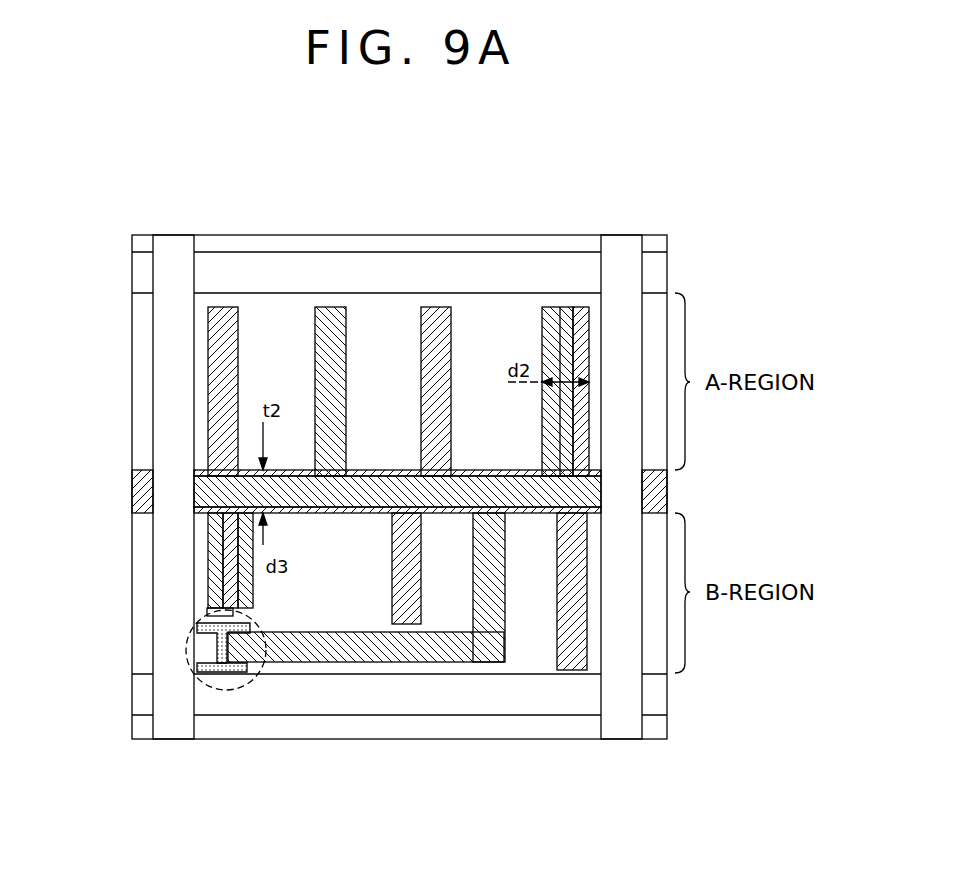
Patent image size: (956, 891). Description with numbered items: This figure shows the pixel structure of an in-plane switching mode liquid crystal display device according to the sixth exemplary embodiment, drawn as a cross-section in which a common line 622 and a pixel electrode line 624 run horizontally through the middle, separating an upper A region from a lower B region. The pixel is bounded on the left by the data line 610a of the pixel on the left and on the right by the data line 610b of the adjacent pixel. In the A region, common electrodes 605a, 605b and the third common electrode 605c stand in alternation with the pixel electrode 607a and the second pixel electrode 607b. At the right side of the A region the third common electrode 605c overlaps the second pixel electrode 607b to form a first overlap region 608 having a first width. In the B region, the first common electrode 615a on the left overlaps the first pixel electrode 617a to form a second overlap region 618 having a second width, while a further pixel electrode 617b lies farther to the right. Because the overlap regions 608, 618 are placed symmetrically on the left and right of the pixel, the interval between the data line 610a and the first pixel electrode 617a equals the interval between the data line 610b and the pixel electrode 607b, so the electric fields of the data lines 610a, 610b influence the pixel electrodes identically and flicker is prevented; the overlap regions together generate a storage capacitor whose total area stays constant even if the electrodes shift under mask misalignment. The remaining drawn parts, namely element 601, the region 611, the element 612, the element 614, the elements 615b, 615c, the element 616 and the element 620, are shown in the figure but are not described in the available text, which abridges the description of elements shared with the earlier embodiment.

The semiconductor device / substrate structure 601 is at (690, 243).
The common electrode 605a is at (225, 305).
The common electrode 605b is at (436, 305).
The third common electrode 605c is at (583, 305).
The pixel electrode 607a is at (326, 305).
The second pixel electrode 607b is at (553, 305).
The overlap region 608 is at (577, 328).
The data line 610a is at (172, 728).
The data line 610b is at (620, 727).
The contact region (enlarged) 611 is at (172, 653).
The contact plug 612 is at (202, 645).
The lower horizontal conductive line 614 is at (278, 655).
The first common electrode 615a is at (210, 547).
The second lower vertical pattern 615b is at (400, 617).
The third lower vertical pattern 615c is at (573, 675).
The contact pad 616 is at (220, 682).
The first pixel electrode 617a is at (252, 596).
The pixel electrode 617b is at (493, 568).
The overlap region 618 is at (212, 583).
The substrate 620 is at (430, 702).
The common line 622 is at (668, 478).
The pixel electrode line 624 is at (600, 502).